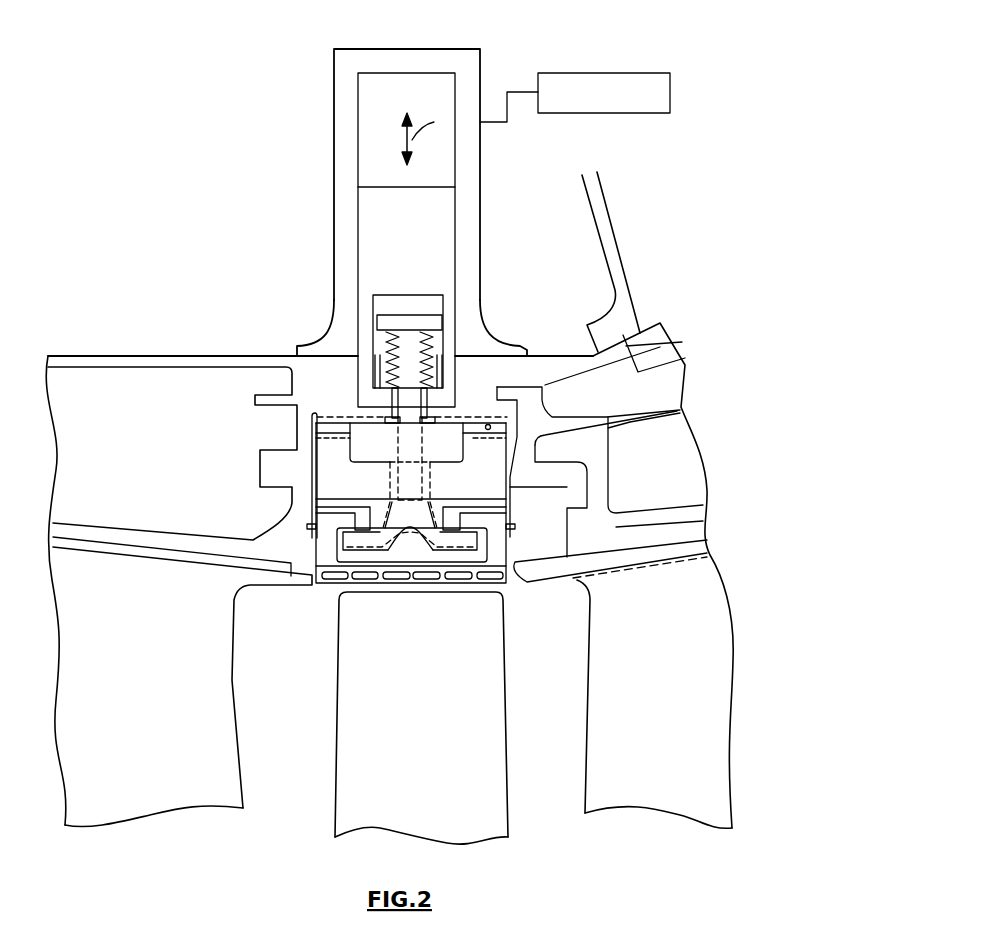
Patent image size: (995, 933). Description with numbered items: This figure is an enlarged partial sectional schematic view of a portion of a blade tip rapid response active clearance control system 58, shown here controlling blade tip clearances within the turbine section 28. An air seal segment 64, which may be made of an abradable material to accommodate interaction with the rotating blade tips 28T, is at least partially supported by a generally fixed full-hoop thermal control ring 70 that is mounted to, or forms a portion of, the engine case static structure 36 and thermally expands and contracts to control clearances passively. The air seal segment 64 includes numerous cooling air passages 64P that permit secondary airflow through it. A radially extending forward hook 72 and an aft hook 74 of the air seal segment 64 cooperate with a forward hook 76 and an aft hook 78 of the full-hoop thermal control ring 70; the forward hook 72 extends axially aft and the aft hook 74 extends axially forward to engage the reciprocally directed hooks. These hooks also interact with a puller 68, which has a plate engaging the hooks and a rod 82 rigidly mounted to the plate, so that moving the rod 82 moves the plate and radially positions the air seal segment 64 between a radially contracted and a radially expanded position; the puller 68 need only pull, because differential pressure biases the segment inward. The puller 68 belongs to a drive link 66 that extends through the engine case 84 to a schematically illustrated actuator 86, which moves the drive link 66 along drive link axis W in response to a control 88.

The turbine section 28 is at (710, 205).
The rotating blade tips 28T is at (435, 592).
The engine case static structure 36 is at (188, 347).
The blade tip rapid response active clearance control system 58 is at (622, 208).
The air seal segment 64 is at (347, 578).
The cooling air passages 64P is at (363, 579).
The drive link 66 is at (326, 216).
The puller 68 is at (467, 540).
The full-hoop thermal control ring 70 is at (332, 431).
The forward hook 72 is at (355, 523).
The aft hook 74 is at (483, 523).
The forward hook 76 is at (328, 543).
The aft hook 78 is at (480, 535).
The rod 82 is at (412, 477).
The engine case 84 is at (243, 353).
The actuator 86 is at (330, 83).
The control 88 is at (670, 92).